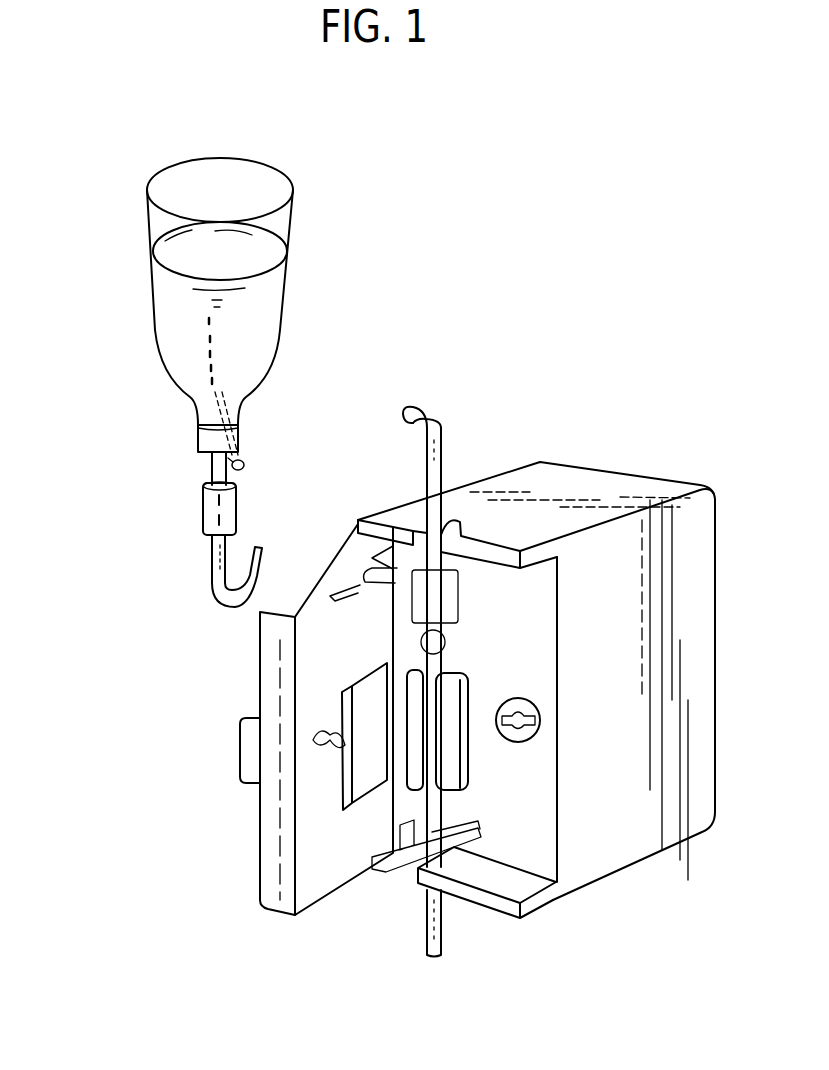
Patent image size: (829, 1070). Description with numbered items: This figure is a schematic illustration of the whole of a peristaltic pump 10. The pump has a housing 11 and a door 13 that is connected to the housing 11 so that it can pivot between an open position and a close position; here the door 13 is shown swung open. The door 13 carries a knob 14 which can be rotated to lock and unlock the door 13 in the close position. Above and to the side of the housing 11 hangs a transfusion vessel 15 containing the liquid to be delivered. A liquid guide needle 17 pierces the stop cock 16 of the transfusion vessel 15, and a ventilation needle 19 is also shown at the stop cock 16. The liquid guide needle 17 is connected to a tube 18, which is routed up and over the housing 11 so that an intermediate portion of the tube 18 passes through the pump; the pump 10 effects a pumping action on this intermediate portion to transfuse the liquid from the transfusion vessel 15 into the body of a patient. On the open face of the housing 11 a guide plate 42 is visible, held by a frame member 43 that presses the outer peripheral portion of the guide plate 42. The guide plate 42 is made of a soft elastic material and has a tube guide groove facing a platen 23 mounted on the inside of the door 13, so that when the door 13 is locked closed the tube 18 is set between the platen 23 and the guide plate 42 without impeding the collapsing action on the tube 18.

The peristaltic pump 10 is at (507, 450).
The housing 11 is at (628, 847).
The door 13 is at (270, 834).
The knob 14 is at (257, 747).
The transfusion vessel 15 is at (167, 291).
The stop cock 16 is at (205, 434).
The liquid guide needle 17 is at (208, 468).
The tube 18 is at (217, 606).
The ventilation needle 19 is at (245, 463).
The platen 23 is at (362, 793).
The guide plate 42 is at (455, 700).
The frame member 43 is at (467, 675).